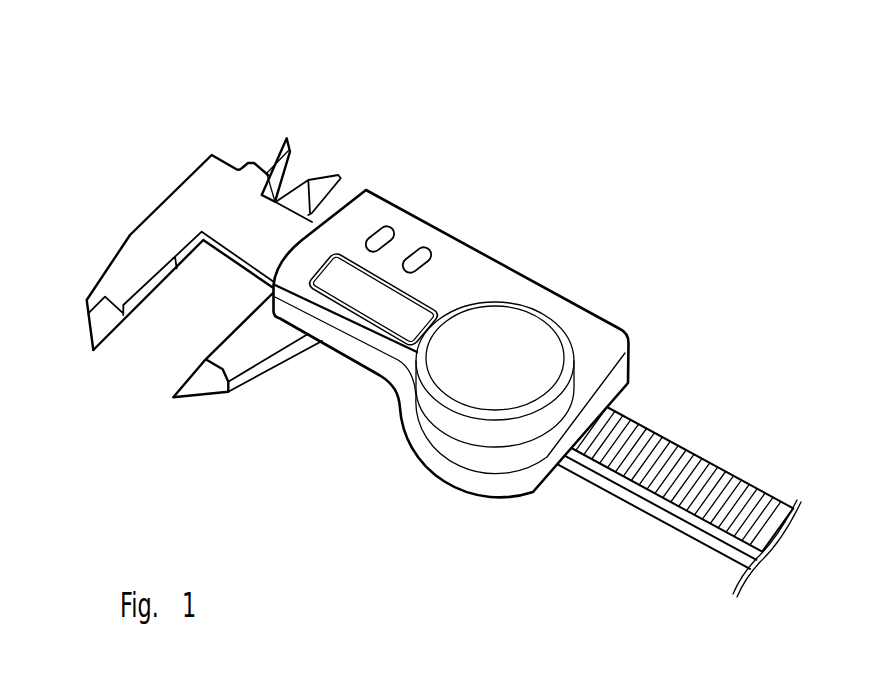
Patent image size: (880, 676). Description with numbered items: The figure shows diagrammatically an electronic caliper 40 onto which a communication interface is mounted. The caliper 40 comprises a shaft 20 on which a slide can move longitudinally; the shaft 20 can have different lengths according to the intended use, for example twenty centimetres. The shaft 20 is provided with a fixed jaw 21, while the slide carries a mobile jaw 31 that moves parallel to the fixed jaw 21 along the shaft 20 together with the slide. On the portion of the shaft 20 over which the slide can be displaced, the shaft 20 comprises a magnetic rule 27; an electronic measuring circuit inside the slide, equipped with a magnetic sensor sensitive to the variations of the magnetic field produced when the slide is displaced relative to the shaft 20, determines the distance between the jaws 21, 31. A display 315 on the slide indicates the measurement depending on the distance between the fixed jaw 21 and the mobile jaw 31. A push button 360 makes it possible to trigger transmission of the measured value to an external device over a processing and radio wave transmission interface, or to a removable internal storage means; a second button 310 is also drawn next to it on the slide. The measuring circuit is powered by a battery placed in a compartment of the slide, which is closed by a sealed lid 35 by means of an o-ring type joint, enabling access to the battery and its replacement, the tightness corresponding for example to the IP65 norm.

The shaft 20 is at (679, 472).
The fixed jaw 21 is at (125, 277).
The magnetic rule 27 is at (646, 469).
The mobile jaw 31 is at (215, 392).
The sealed lid 35 is at (532, 341).
The caliper 40 is at (520, 225).
The first button 310 is at (367, 213).
The display 315 is at (368, 305).
The push button 360 is at (383, 233).